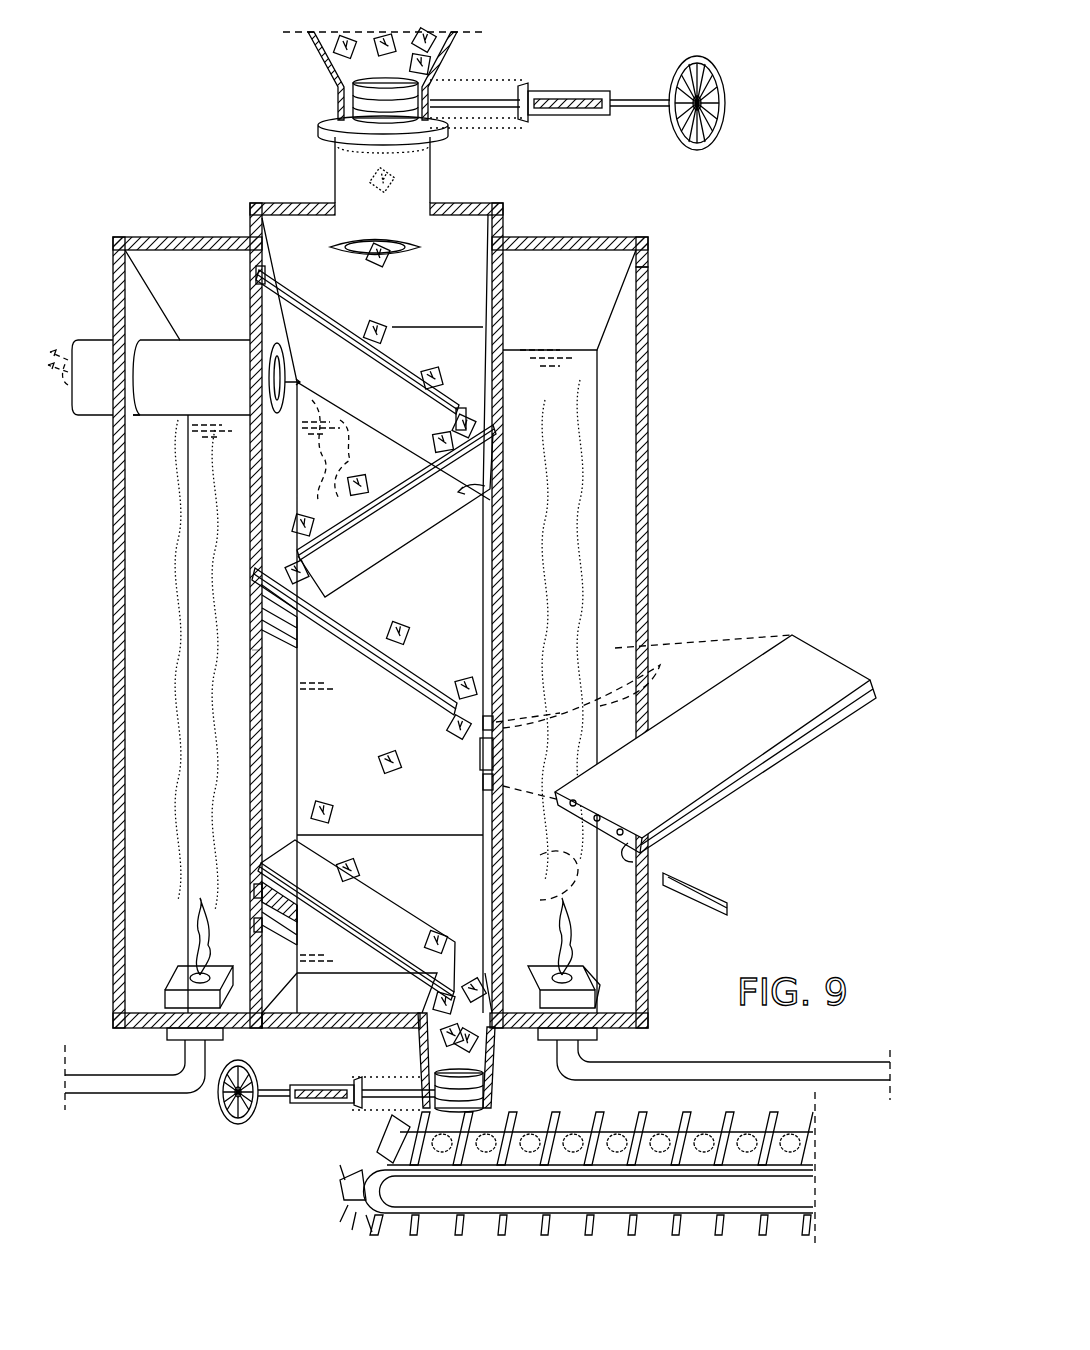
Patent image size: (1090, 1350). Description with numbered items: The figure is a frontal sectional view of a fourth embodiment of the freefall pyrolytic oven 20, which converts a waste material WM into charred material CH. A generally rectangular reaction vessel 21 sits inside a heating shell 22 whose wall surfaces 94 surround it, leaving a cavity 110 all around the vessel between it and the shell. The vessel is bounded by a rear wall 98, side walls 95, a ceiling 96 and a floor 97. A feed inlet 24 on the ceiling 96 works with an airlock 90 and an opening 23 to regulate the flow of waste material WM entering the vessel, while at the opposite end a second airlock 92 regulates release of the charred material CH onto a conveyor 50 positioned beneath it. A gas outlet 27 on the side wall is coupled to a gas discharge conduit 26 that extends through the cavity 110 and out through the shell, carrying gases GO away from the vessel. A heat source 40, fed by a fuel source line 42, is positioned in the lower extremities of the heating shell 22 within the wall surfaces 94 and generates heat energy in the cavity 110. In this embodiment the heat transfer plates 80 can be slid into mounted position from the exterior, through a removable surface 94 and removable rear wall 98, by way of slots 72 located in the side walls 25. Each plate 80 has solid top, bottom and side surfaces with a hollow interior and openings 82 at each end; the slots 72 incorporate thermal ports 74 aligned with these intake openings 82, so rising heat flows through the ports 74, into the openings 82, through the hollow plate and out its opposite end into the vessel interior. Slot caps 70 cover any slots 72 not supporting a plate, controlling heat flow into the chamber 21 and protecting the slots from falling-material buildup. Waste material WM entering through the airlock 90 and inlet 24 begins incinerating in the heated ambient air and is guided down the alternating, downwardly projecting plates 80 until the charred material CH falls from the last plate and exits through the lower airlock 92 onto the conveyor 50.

The freefall pyrolytic oven 20 is at (196, 116).
The reaction vessel 21 is at (505, 290).
The heating shell 22 is at (652, 318).
The opening 23 is at (372, 245).
The feed inlet 24 is at (318, 131).
The side walls 25 is at (540, 292).
The gas discharge conduit 26 is at (99, 345).
The gas outlet 27 is at (262, 292).
The heat source 40 is at (172, 986).
The fuel source line 42 is at (122, 1093).
The waste material conveyor 50 is at (355, 1192).
The slot caps 70 is at (262, 606).
The slots 72 is at (495, 720).
The thermal ports 74 is at (496, 768).
The heat transfer plates 80 is at (472, 490).
The openings 82 is at (638, 858).
The airlock 90 is at (522, 88).
The airlock 92 is at (340, 1118).
The wall surfaces 94 is at (646, 392).
The side walls 95 is at (256, 668).
The ceiling 96 is at (470, 207).
The floor 97 is at (292, 1028).
The rear wall 98 is at (597, 355).
The cavity 110 is at (582, 432).
The waste material WM is at (440, 17).
The gas outlet flow GO is at (49, 394).
The charred material CH is at (815, 1135).